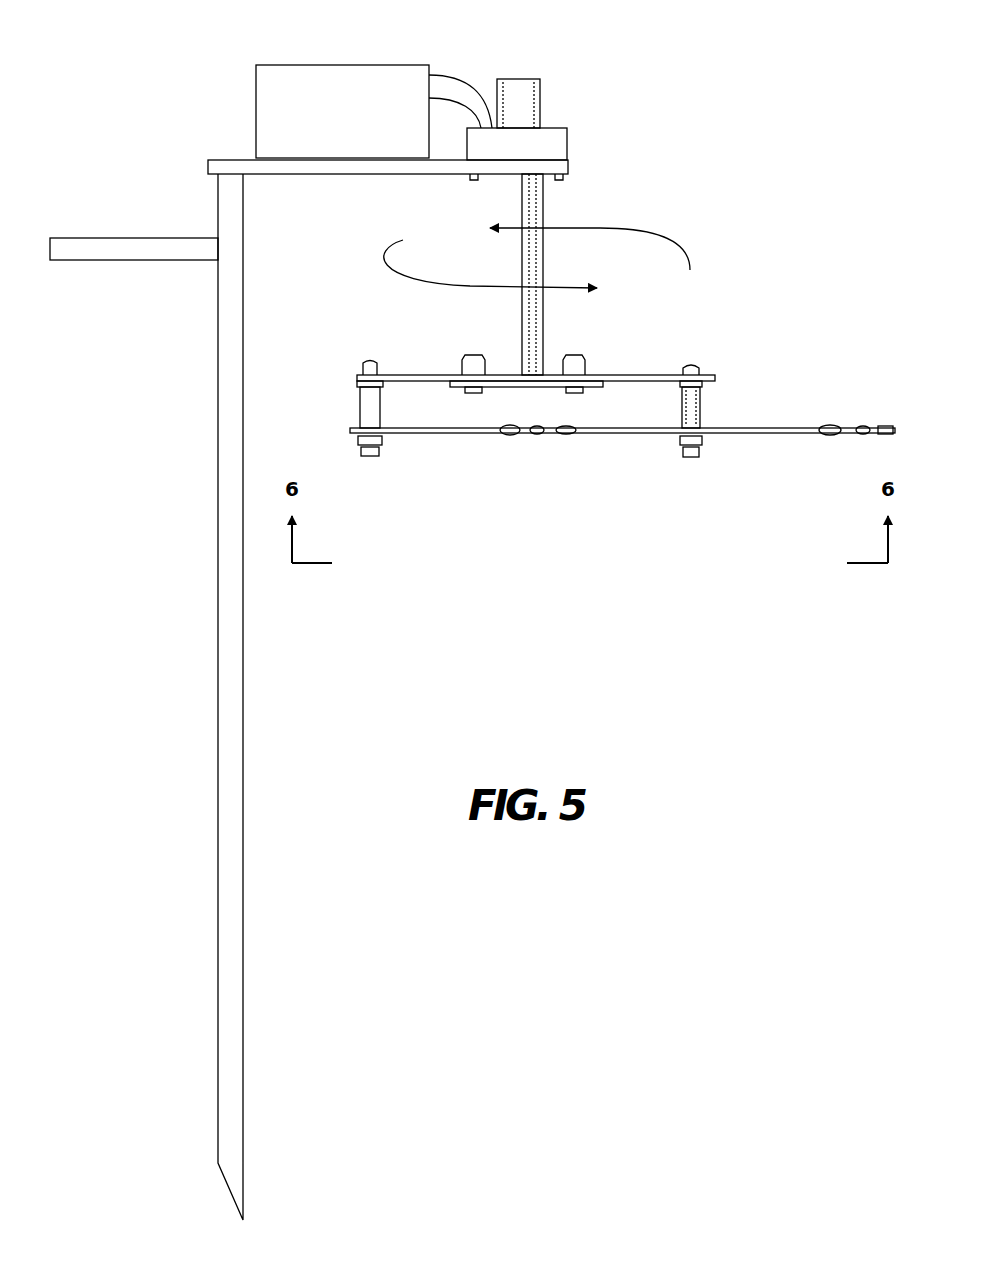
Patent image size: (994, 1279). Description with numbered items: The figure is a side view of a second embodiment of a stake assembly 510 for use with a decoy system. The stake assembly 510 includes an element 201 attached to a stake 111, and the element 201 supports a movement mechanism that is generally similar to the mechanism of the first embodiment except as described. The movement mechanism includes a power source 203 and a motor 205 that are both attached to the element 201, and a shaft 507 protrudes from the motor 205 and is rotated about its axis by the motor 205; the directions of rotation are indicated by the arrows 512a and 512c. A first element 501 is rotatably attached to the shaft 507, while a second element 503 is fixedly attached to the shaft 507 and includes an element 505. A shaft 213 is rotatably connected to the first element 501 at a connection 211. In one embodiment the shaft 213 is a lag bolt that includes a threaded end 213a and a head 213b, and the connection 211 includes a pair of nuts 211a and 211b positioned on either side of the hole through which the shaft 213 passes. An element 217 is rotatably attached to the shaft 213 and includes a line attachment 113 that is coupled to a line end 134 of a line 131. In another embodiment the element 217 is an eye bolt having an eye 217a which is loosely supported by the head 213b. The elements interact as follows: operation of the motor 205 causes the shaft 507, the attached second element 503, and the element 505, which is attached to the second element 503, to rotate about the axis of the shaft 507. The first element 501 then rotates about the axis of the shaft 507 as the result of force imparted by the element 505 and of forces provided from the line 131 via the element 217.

The stake assembly 510 is at (150, 82).
The stake 111 is at (218, 478).
The element 201 is at (333, 175).
The power source 203 is at (355, 65).
The motor 205 is at (552, 128).
The shaft 507 is at (545, 218).
The rotation direction 512a is at (742, 265).
The rotation direction 512c is at (382, 340).
The connection 211 is at (720, 372).
The nut 211a is at (685, 372).
The nut 211b is at (680, 385).
The first element 501 is at (595, 387).
The second element 503 is at (513, 387).
The element 505 is at (577, 345).
The shaft 213 is at (702, 410).
The threaded end 213a is at (692, 364).
The head 213b is at (688, 458).
The element 217 is at (745, 428).
The eye 217a is at (676, 432).
The line attachment 113 is at (822, 436).
The line end 134 is at (880, 437).
The line 131 is at (893, 430).